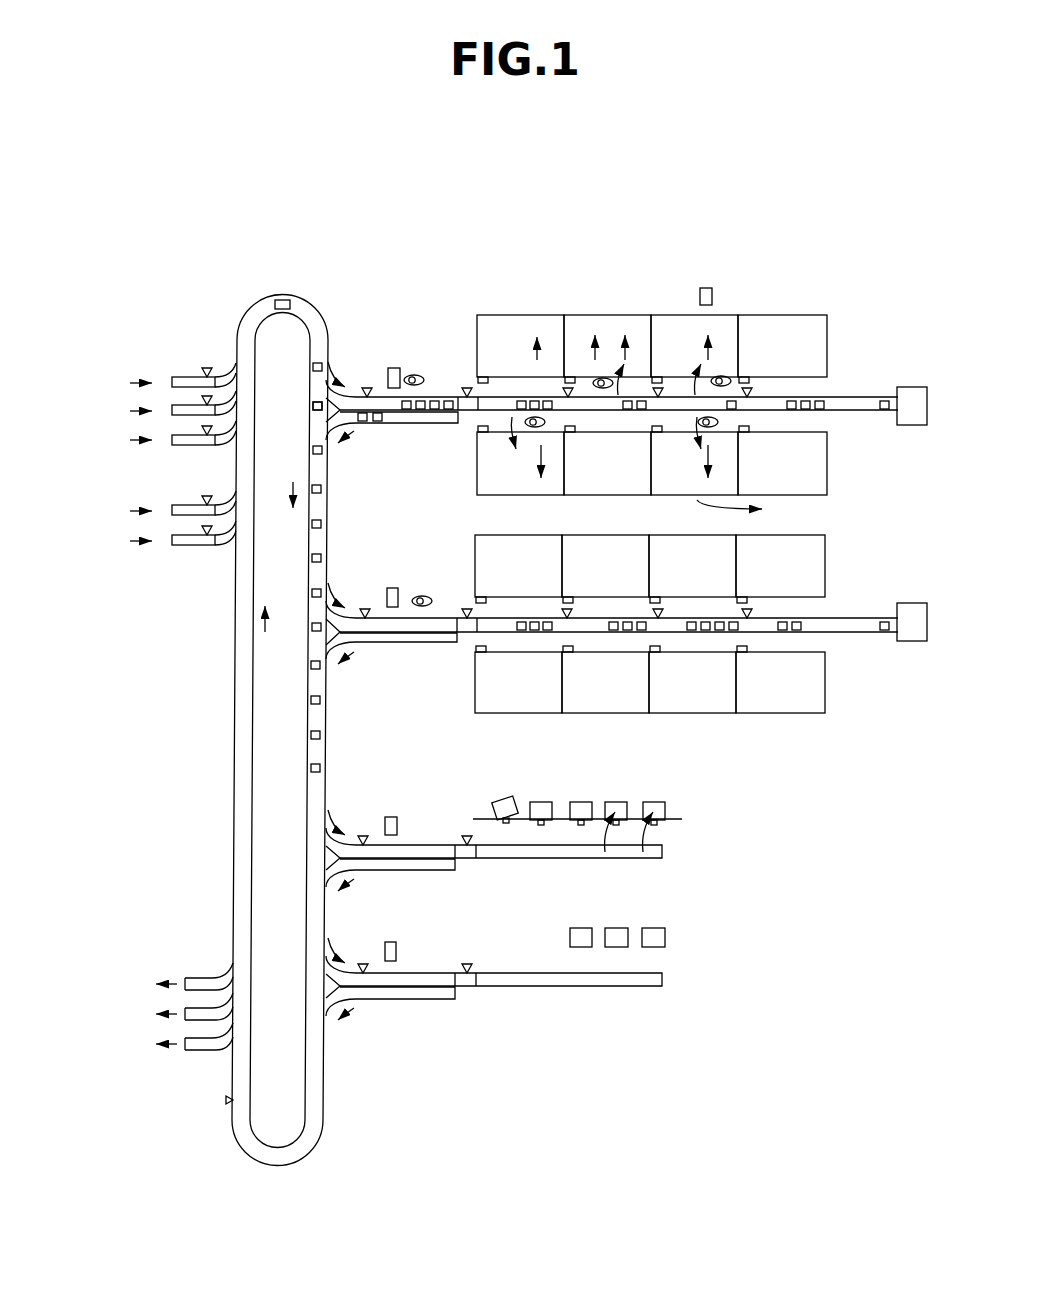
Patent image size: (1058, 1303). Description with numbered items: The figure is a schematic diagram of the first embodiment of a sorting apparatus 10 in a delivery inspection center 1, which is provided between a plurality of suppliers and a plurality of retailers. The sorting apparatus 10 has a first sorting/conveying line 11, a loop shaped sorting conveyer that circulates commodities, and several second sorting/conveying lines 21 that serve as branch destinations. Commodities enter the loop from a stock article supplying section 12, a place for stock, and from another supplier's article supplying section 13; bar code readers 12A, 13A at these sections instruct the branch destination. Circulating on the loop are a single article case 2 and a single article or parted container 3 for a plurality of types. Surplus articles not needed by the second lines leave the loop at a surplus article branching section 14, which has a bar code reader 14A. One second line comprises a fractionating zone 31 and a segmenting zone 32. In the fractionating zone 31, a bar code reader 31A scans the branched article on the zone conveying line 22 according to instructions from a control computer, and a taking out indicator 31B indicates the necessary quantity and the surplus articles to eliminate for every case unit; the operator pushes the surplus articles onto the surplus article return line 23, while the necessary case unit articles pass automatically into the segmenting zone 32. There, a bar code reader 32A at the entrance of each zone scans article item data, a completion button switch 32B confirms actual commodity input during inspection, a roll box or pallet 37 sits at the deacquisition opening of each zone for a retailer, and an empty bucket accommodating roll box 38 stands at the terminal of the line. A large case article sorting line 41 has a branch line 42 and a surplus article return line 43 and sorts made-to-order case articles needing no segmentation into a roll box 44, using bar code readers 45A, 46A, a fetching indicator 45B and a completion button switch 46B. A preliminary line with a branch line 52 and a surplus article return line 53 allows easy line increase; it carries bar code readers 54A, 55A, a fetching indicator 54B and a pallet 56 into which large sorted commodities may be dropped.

The delivery inspection center 1 is at (330, 215).
The sorting apparatus 10 is at (288, 259).
The first sorting/conveying line 11 is at (252, 304).
The stock article supplying section 12 is at (97, 350).
The bar code reader 12A is at (207, 369).
The another supplier's article supplying section 13 is at (97, 478).
The bar code reader 13A is at (207, 497).
The surplus article branching section 14 is at (92, 970).
The bar code reader 14A is at (226, 1100).
The single article case 2 is at (284, 312).
The single article or parted container 3 is at (311, 407).
The second sorting/conveying line 21 is at (422, 345).
The zone conveying line 22 is at (870, 414).
The surplus article return line 23 is at (398, 424).
The fractionating zone 31 is at (390, 266).
The bar code reader 31A is at (367, 387).
The taking out indicator 31B is at (392, 367).
The segmenting zone 32 is at (604, 312).
The bar code reader 32A is at (467, 387).
The completion button switch 32B is at (476, 434).
The roll box or pallet 37 is at (705, 287).
The empty bucket accommodating roll box 38 is at (912, 386).
The large case article sorting line 41 is at (731, 809).
The branch line 42 is at (663, 858).
The surplus article return line 43 is at (413, 866).
The roll box 44 is at (666, 806).
The bar code reader 45A is at (363, 836).
The fetching indicator 45B is at (390, 816).
The bar code reader 46A is at (467, 836).
The completion button switch 46B is at (664, 823).
The branch line 52 is at (663, 986).
The surplus article return line 53 is at (410, 996).
The bar code reader 54A is at (363, 964).
The fetching indicator 54B is at (397, 944).
The bar code reader 55A is at (481, 940).
The pallet 56 is at (665, 938).